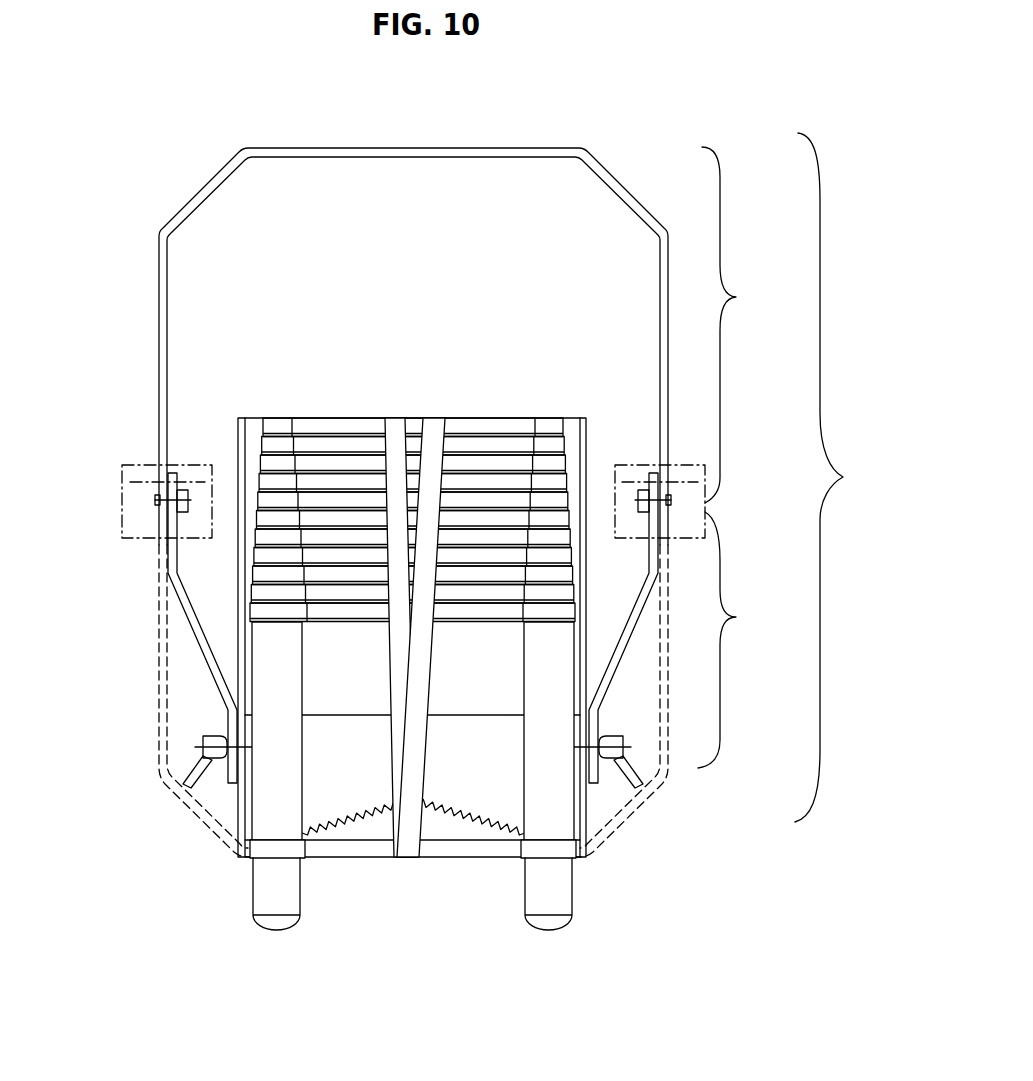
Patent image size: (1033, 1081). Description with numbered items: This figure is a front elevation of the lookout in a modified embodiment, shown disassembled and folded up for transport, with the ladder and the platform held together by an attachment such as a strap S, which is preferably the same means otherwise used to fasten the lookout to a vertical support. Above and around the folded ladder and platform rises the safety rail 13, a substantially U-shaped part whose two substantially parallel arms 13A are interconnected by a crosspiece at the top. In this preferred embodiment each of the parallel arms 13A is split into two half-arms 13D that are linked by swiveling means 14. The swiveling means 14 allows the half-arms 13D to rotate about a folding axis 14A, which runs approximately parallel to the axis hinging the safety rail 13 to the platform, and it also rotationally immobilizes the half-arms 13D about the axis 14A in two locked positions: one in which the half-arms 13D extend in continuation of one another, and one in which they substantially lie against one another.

The safety rail 13 is at (686, 136).
The parallel arms 13A is at (488, 152).
The half-arms 13D is at (738, 296).
The swiveling means 14 is at (120, 531).
The folding axis 14A is at (137, 482).
The strap S is at (431, 418).